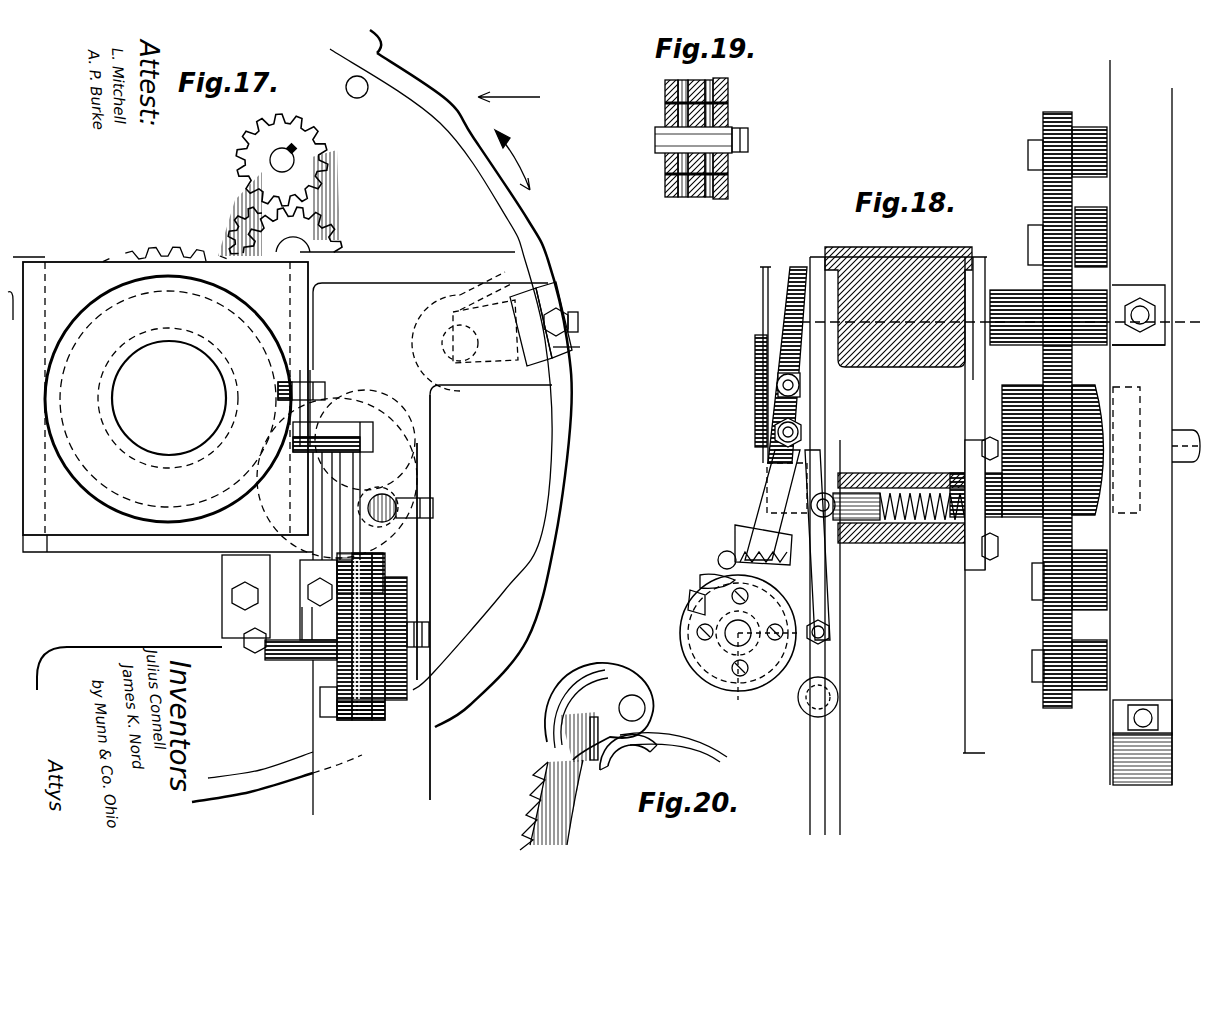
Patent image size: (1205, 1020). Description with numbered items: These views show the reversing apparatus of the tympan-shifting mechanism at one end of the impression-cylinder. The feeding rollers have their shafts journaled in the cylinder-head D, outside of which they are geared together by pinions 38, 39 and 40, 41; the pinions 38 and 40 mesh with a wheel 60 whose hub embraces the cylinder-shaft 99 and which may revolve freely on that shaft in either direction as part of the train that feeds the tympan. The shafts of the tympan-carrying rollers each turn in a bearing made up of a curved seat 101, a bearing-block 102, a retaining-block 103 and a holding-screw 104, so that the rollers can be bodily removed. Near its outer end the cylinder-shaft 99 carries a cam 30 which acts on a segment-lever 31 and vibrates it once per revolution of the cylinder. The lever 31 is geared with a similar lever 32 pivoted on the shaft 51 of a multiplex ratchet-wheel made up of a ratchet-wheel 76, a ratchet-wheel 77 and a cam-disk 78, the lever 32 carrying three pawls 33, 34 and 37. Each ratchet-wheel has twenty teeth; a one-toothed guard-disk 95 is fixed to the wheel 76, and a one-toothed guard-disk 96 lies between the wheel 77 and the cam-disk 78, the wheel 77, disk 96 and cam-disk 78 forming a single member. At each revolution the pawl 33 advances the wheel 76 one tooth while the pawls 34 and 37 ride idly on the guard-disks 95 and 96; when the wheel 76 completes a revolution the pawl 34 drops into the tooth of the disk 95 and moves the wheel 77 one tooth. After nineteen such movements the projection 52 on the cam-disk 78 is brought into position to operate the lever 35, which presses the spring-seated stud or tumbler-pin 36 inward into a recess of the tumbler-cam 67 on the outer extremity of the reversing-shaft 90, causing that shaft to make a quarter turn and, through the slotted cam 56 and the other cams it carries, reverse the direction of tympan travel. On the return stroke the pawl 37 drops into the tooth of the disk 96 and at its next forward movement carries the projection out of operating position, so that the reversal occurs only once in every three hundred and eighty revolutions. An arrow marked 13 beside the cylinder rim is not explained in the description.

In FIG. 17, the direction arrow 13 is at (510, 131).
In FIG. 18, the cam 30 is at (768, 270).
In FIG. 17, the segment-lever 31 is at (305, 520).
In FIG. 18, the segment-lever 31 is at (760, 490).
In FIG. 17, the lever 32 is at (279, 607).
In FIG. 18, the lever 32 is at (735, 548).
In FIG. 17, the pawl 33 is at (345, 506).
In FIG. 20, the pawl 33 is at (553, 708).
In FIG. 17, the pawl 34 is at (365, 522).
In FIG. 20, the pawl 34 is at (568, 720).
In FIG. 17, the lever 35 is at (420, 600).
In FIG. 18, the lever 35 is at (832, 597).
In FIG. 18, the tumbler-pin 36 is at (1000, 556).
In FIG. 17, the pawl 37 is at (379, 528).
In FIG. 18, the pawl 37 is at (718, 560).
In FIG. 20, the pawl 37 is at (617, 727).
In FIG. 17, the pinion 38 is at (338, 216).
In FIG. 18, the pinion 38 is at (1040, 213).
In FIG. 17, the pinion 39 is at (322, 150).
In FIG. 18, the pinion 39 is at (1048, 112).
In FIG. 17, the pinion 40 is at (243, 222).
In FIG. 18, the pinion 40 is at (1043, 624).
In FIG. 18, the pinion 41 is at (1043, 704).
In FIG. 17, the shaft 51 is at (434, 628).
In FIG. 19, the shaft 51 is at (655, 140).
In FIG. 18, the shaft 51 is at (742, 630).
In FIG. 18, the projection 52 is at (816, 644).
In FIG. 18, the slotted cam 56 is at (1088, 450).
In FIG. 17, the wheel 60 is at (168, 250).
In FIG. 18, the wheel 60 is at (1040, 365).
In FIG. 17, the tumbler-cam 67 is at (395, 452).
In FIG. 18, the tumbler-cam 67 is at (1025, 513).
In FIG. 17, the ratchet-wheel 76 is at (340, 660).
In FIG. 19, the ratchet-wheel 76 is at (668, 197).
In FIG. 20, the ratchet-wheel 76 is at (523, 804).
In FIG. 17, the ratchet-wheel 77 is at (370, 715).
In FIG. 19, the ratchet-wheel 77 is at (696, 197).
In FIG. 18, the ratchet-wheel 77 is at (710, 585).
In FIG. 20, the ratchet-wheel 77 is at (570, 802).
In FIG. 17, the cam-disk 78 is at (396, 718).
In FIG. 19, the cam-disk 78 is at (728, 197).
In FIG. 18, the cam-disk 78 is at (738, 633).
In FIG. 20, the cam-disk 78 is at (673, 757).
In FIG. 18, the reversing-shaft 90 is at (1190, 462).
In FIG. 17, the guard-disk 95 is at (352, 712).
In FIG. 19, the guard-disk 95 is at (683, 197).
In FIG. 18, the guard-disk 95 is at (690, 604).
In FIG. 20, the guard-disk 95 is at (540, 785).
In FIG. 17, the guard-disk 96 is at (384, 718).
In FIG. 19, the guard-disk 96 is at (710, 197).
In FIG. 20, the guard-disk 96 is at (620, 768).
In FIG. 17, the cylinder-shaft 99 is at (163, 404).
In FIG. 18, the cylinder-shaft 99 is at (756, 390).
In FIG. 17, the curved seat 101 is at (445, 343).
In FIG. 17, the bearing-block 102 is at (485, 317).
In FIG. 17, the retaining-block 103 is at (545, 315).
In FIG. 18, the retaining-block 103 is at (1138, 346).
In FIG. 17, the holding-screw 104 is at (566, 318).
In FIG. 18, the holding-screw 104 is at (1140, 300).
In FIG. 17, the cylinder-head D is at (290, 422).
In FIG. 18, the cylinder-head D is at (1000, 447).